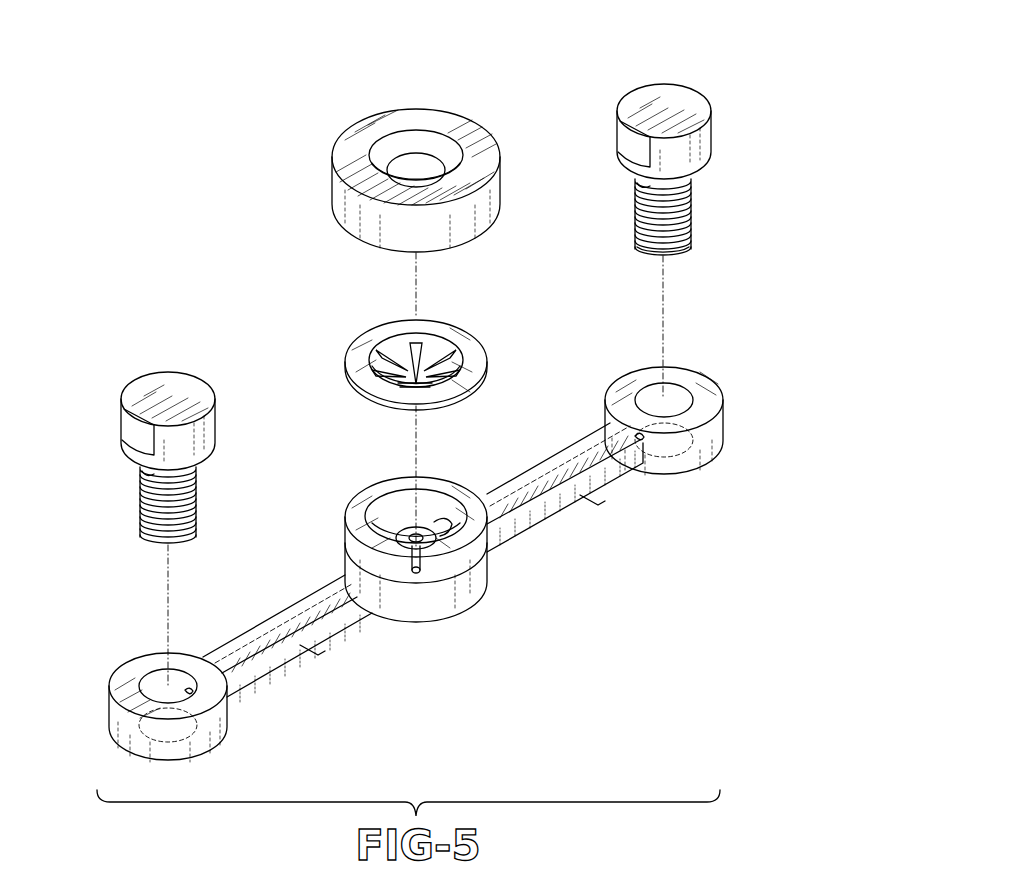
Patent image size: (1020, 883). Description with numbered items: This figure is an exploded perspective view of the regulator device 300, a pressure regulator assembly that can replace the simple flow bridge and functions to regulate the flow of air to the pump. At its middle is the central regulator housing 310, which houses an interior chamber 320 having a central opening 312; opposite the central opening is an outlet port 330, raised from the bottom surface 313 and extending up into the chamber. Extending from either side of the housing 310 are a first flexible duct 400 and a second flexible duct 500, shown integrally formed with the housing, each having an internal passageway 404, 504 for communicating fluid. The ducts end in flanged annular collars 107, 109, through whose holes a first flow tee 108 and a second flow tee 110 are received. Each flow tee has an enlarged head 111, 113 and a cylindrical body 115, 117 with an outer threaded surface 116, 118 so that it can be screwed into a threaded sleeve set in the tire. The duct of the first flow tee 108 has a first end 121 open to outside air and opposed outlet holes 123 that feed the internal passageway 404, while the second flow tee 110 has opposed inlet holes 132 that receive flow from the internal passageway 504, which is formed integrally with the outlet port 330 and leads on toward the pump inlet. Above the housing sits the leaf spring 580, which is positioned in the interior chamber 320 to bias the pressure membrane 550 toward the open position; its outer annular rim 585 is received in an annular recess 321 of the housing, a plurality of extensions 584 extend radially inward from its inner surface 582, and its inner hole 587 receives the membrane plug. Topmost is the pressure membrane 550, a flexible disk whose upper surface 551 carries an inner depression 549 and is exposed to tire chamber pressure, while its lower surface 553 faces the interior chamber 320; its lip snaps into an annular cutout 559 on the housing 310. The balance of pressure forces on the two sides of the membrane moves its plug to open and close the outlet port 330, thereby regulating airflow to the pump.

The regulator device 300 is at (212, 140).
The pressure membrane 550 is at (480, 107).
The upper surface 551 is at (368, 133).
The inner depression 549 is at (407, 168).
The lower surface 553 is at (356, 230).
The second flow tee 110 is at (705, 85).
The enlarged head 113 is at (657, 100).
The outer threaded surface 118 is at (693, 215).
The opposed inlet holes 132 is at (637, 190).
The cylindrical body 117 is at (632, 236).
The first flow tee 108 is at (202, 374).
The enlarged head 111 is at (161, 389).
The opposed outlet holes 123 is at (145, 485).
The cylindrical body 115 is at (136, 523).
The first end 121 is at (152, 540).
The outer threaded surface 116 is at (196, 522).
The leaf spring 580 is at (398, 323).
The inner surface 582 is at (432, 345).
The outer annular rim 585 is at (358, 363).
The inner hole 587 is at (408, 378).
The extensions 584 is at (443, 382).
The central regulator housing 310 is at (457, 600).
The central opening 312 is at (382, 505).
The interior chamber 320 is at (412, 525).
The annular recess 321 is at (401, 505).
The bottom surface 313 is at (445, 530).
The outlet port 330 is at (415, 536).
The annular cutout 559 is at (425, 582).
The first flexible duct 400 is at (300, 650).
The internal passageway 404 is at (353, 620).
The second flexible duct 500 is at (548, 507).
The internal passageway 504 is at (600, 488).
The flanged annular collar 107 is at (125, 688).
The flanged annular collar 109 is at (695, 452).